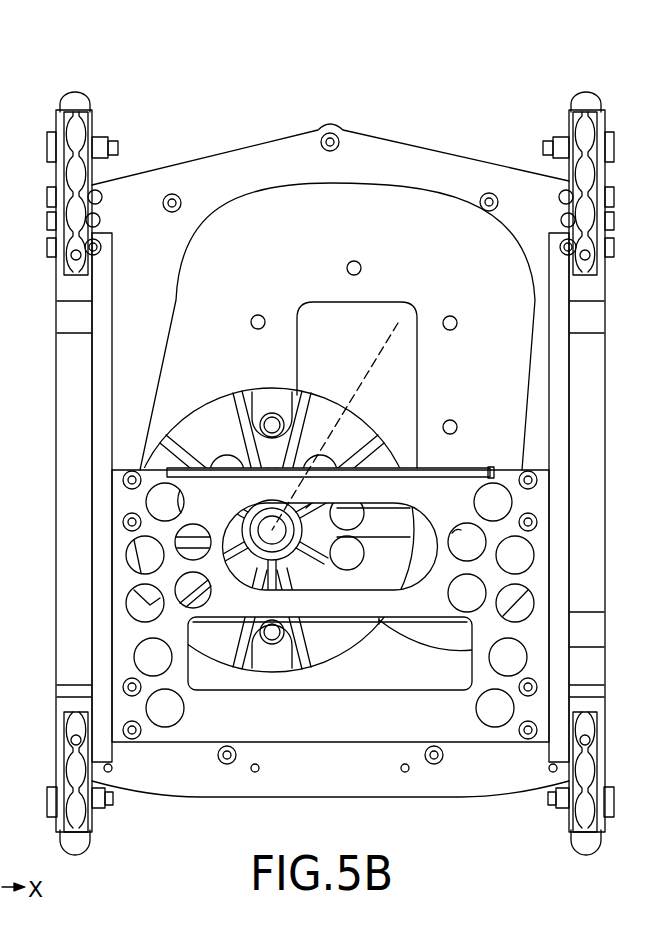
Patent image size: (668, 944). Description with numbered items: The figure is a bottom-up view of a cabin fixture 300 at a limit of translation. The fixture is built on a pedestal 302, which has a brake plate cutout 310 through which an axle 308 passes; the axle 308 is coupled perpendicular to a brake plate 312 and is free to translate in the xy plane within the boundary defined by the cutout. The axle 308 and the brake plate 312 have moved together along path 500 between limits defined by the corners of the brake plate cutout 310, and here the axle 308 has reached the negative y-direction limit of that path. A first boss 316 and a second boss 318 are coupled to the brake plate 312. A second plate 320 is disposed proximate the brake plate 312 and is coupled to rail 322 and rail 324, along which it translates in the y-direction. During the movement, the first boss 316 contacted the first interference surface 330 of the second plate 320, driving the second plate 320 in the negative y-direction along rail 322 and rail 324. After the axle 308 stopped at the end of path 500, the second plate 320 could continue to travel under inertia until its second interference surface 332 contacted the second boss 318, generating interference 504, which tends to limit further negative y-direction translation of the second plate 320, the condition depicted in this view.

The cabin fixture 300 is at (336, 440).
The pedestal 302 is at (218, 180).
The axle 308 is at (268, 528).
The brake plate cutout 310 is at (328, 302).
The brake plate 312 is at (222, 442).
The first boss 316 is at (267, 418).
The second boss 318 is at (258, 640).
The second plate 320 is at (336, 724).
The rail 322 is at (562, 530).
The rail 324 is at (100, 383).
The first interference surface 330 is at (487, 467).
The second interference surface 332 is at (396, 622).
The path 500 is at (390, 323).
The interference 504 is at (272, 630).